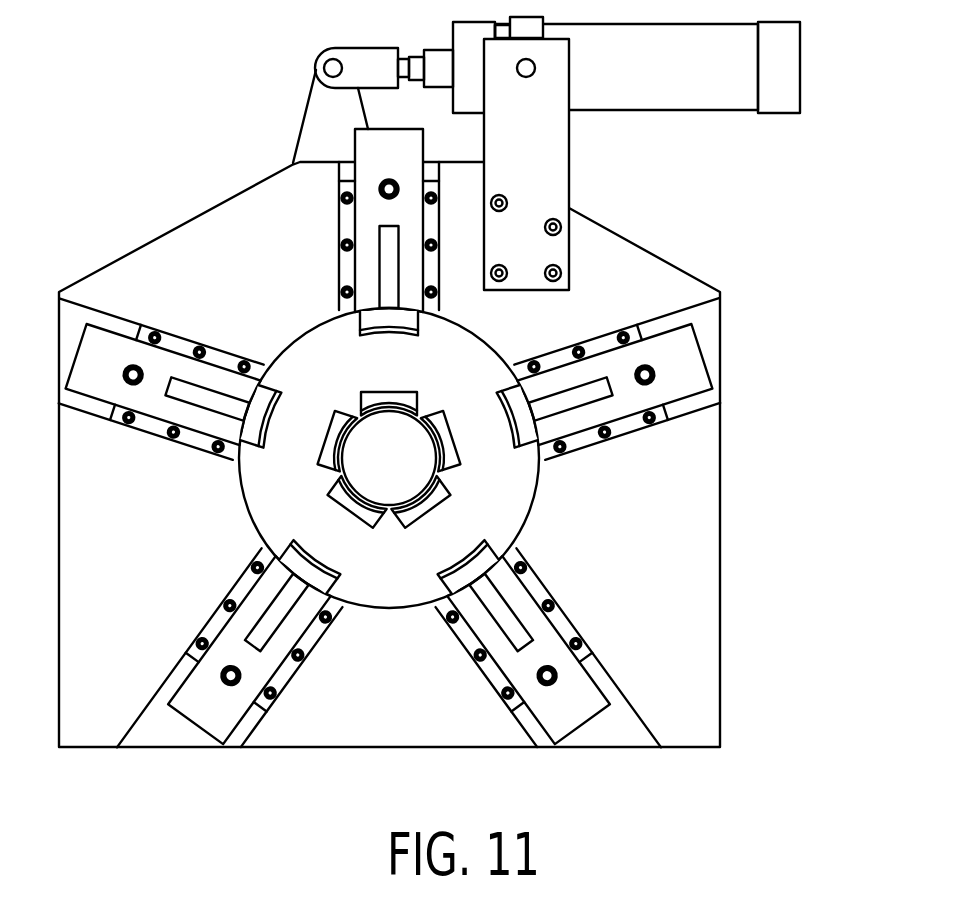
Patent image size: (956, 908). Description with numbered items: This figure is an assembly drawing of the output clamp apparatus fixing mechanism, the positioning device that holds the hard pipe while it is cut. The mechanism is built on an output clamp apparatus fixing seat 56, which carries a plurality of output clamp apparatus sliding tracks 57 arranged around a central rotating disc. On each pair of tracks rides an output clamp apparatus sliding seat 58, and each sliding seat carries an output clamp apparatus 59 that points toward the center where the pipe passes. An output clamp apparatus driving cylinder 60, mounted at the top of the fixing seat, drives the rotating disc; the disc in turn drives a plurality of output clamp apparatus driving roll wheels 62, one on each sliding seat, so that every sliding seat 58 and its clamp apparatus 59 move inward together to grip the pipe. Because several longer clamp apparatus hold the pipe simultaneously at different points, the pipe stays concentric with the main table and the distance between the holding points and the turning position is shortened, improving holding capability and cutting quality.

The output clamp apparatus fixing seat 56 is at (685, 645).
The output clamp apparatus sliding track 57 is at (623, 338).
The output clamp apparatus sliding seat 58 is at (688, 348).
The output clamp apparatus 59 is at (485, 557).
The output clamp apparatus driving cylinder 60 is at (788, 82).
The output clamp apparatus driving roll wheel 62 is at (658, 375).